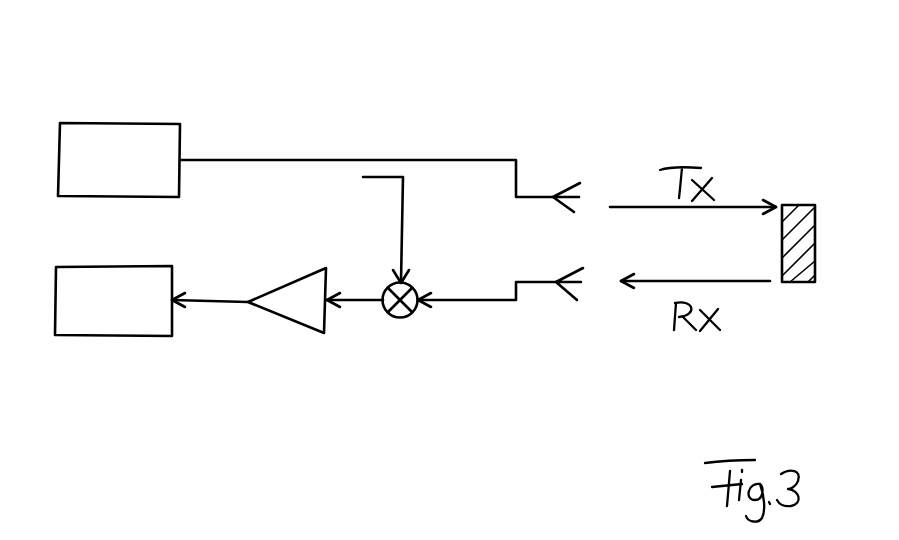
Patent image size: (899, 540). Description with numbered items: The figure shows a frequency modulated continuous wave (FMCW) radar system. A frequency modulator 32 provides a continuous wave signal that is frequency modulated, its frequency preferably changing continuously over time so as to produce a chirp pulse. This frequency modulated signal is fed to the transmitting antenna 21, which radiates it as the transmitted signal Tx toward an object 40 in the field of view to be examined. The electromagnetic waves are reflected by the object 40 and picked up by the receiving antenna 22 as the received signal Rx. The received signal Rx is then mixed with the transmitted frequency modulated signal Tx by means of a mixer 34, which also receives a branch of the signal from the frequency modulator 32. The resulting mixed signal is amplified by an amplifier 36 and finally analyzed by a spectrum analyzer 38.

The transmitting antenna 21 is at (570, 180).
The receiving antenna 22 is at (565, 300).
The frequency modulator 32 is at (122, 136).
The mixer 34 is at (393, 318).
The amplifier 36 is at (290, 310).
The spectrum analyzer 38 is at (95, 326).
The object 40 is at (798, 218).